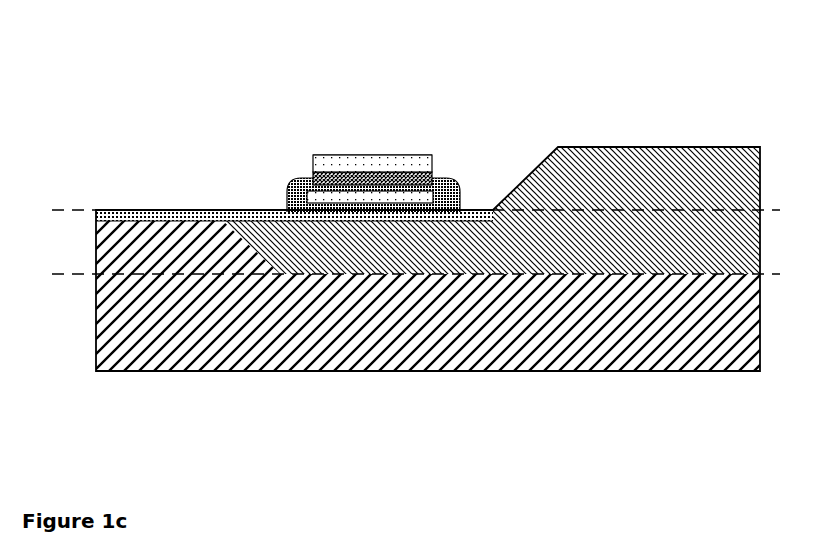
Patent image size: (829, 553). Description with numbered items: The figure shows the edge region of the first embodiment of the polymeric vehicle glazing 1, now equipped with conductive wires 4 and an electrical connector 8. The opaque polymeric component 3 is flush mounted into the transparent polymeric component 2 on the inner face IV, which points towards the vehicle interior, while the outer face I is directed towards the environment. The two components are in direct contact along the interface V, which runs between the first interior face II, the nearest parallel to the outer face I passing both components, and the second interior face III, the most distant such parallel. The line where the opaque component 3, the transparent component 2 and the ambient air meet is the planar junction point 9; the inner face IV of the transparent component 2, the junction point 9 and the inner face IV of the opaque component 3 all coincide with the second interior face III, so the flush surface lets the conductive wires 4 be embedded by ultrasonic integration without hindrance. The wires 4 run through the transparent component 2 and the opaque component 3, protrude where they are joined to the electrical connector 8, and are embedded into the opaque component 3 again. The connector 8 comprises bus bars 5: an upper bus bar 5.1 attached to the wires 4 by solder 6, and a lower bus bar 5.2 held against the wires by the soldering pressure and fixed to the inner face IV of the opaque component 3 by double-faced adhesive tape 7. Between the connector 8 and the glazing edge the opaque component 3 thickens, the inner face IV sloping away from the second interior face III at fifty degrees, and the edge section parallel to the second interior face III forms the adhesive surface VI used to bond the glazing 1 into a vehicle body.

The polymeric vehicle glazing 1 is at (443, 409).
The transparent polymeric component 2 is at (633, 345).
The opaque polymeric component 3 is at (717, 182).
The conductive wires 4 is at (205, 215).
The bus bars 5 is at (334, 112).
The upper bus bar 5.1 is at (333, 162).
The lower bus bar 5.2 is at (325, 197).
The solder 6 is at (397, 177).
The double-faced adhesive tape 7 is at (442, 198).
The electrical connector 8 is at (385, 147).
The junction point 9 is at (223, 208).
The outer face I is at (254, 375).
The first interior face II is at (403, 277).
The second interior face III is at (401, 214).
The inner face IV is at (148, 206).
The interface V is at (655, 273).
The adhesive surface VI is at (610, 144).